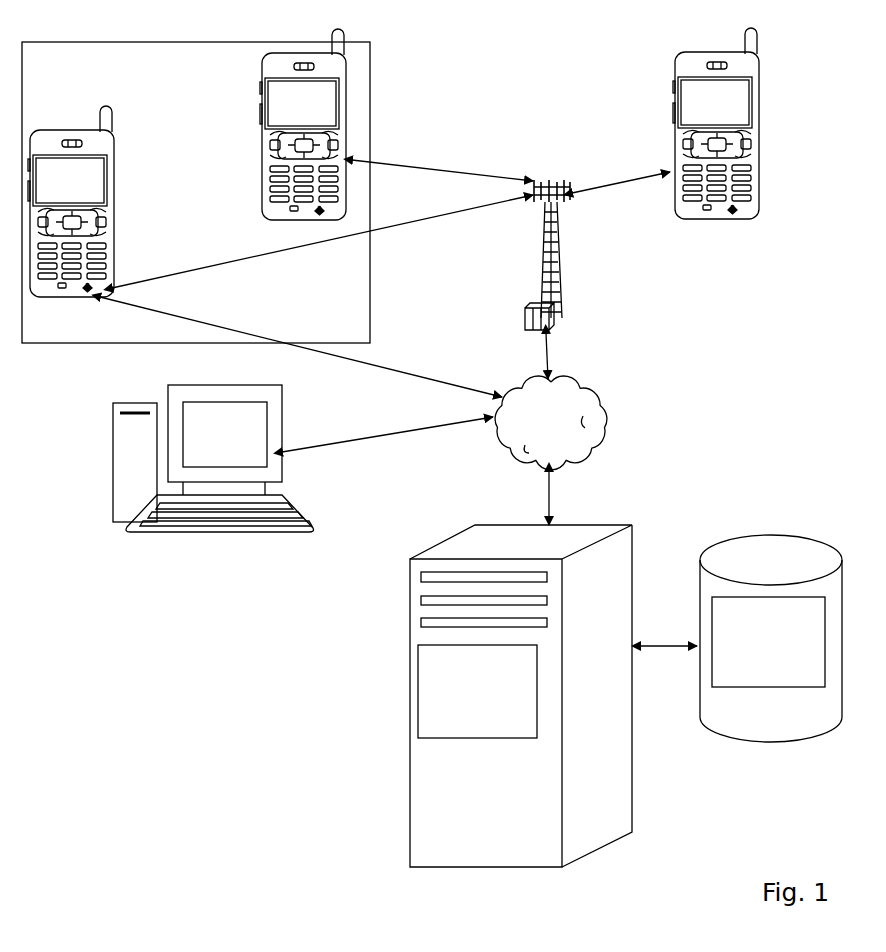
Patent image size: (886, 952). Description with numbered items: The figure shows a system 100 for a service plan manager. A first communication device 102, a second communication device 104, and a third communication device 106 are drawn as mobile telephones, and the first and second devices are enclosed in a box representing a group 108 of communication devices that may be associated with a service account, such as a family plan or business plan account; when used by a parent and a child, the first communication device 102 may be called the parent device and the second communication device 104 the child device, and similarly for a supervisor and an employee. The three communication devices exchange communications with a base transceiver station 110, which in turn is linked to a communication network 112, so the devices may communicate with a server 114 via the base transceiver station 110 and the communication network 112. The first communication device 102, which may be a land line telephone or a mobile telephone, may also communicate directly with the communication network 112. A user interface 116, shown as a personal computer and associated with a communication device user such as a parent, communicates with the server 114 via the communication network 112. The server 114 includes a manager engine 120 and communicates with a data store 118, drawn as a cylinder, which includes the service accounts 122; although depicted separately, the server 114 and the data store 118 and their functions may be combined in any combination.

The system 100 is at (492, 82).
The first communication device 102 is at (58, 292).
The second communication device 104 is at (276, 219).
The third communication device 106 is at (713, 217).
The group 108 is at (118, 342).
The base transceiver station 110 is at (543, 262).
The communication network 112 is at (524, 468).
The server 114 is at (472, 696).
The user interface 116 is at (275, 533).
The data store 118 is at (771, 651).
The manager engine 120 is at (410, 738).
The service accounts 122 is at (768, 642).